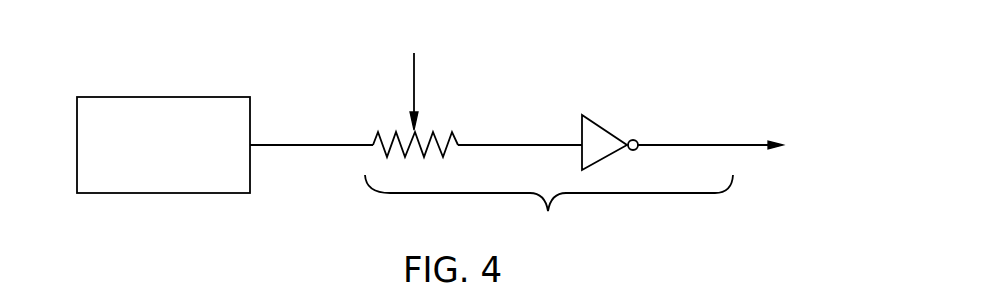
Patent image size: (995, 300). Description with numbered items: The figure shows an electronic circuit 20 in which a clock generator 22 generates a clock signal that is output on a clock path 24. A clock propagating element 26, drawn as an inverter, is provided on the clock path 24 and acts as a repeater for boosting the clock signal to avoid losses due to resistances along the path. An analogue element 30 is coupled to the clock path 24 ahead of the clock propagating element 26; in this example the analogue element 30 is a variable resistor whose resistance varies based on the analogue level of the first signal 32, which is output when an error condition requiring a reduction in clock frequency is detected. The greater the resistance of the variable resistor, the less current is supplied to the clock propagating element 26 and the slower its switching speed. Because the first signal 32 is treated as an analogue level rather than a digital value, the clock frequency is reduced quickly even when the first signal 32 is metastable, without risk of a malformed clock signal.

The electronic circuit 20 is at (128, 62).
The clock generator 22 is at (188, 97).
The clock path 24 is at (549, 211).
The clock propagating element 26 is at (608, 127).
The analogue element 30 is at (400, 118).
The first signal 32 is at (415, 73).